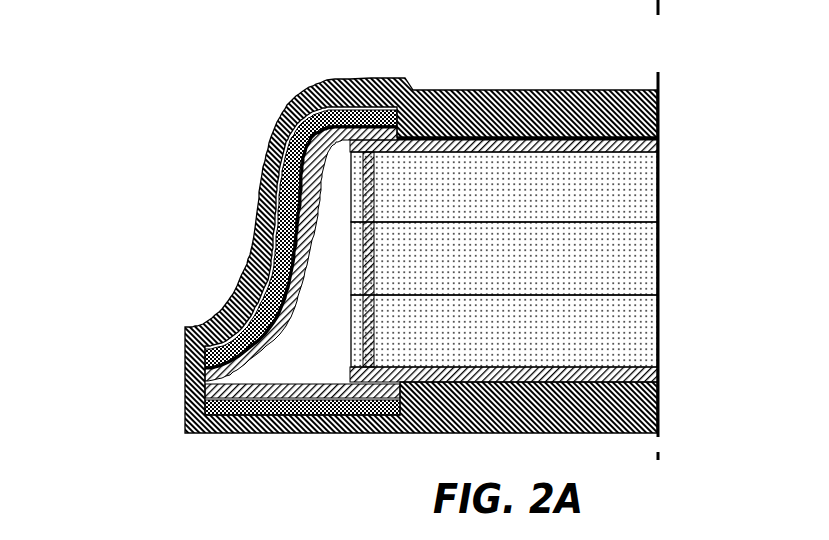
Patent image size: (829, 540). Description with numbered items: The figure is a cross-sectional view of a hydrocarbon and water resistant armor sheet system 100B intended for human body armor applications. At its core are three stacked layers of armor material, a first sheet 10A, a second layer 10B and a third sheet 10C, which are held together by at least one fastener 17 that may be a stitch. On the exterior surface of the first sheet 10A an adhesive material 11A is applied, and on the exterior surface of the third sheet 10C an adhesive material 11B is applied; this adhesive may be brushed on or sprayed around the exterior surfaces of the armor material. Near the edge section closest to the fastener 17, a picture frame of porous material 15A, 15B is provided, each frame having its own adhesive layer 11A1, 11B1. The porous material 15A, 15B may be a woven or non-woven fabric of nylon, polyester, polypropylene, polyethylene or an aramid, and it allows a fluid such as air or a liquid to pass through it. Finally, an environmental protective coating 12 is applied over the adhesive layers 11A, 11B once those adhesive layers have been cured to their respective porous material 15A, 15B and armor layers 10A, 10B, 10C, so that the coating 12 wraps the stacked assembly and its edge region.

The hydrocarbon and water resistant armor sheet system 100B is at (148, 88).
The environmental protective coating 12 is at (260, 247).
The porous material 15A is at (355, 120).
The fastener 17 is at (367, 210).
The adhesive material 11A is at (470, 147).
The adhesive layer 11A1 is at (218, 372).
The adhesive material 11B is at (412, 373).
The adhesive layer 11B1 is at (212, 390).
The porous material 15B is at (270, 407).
The first sheet of armor material 10A is at (628, 187).
The second layer of armor material 10B is at (637, 268).
The third sheet of armor material 10C is at (643, 338).